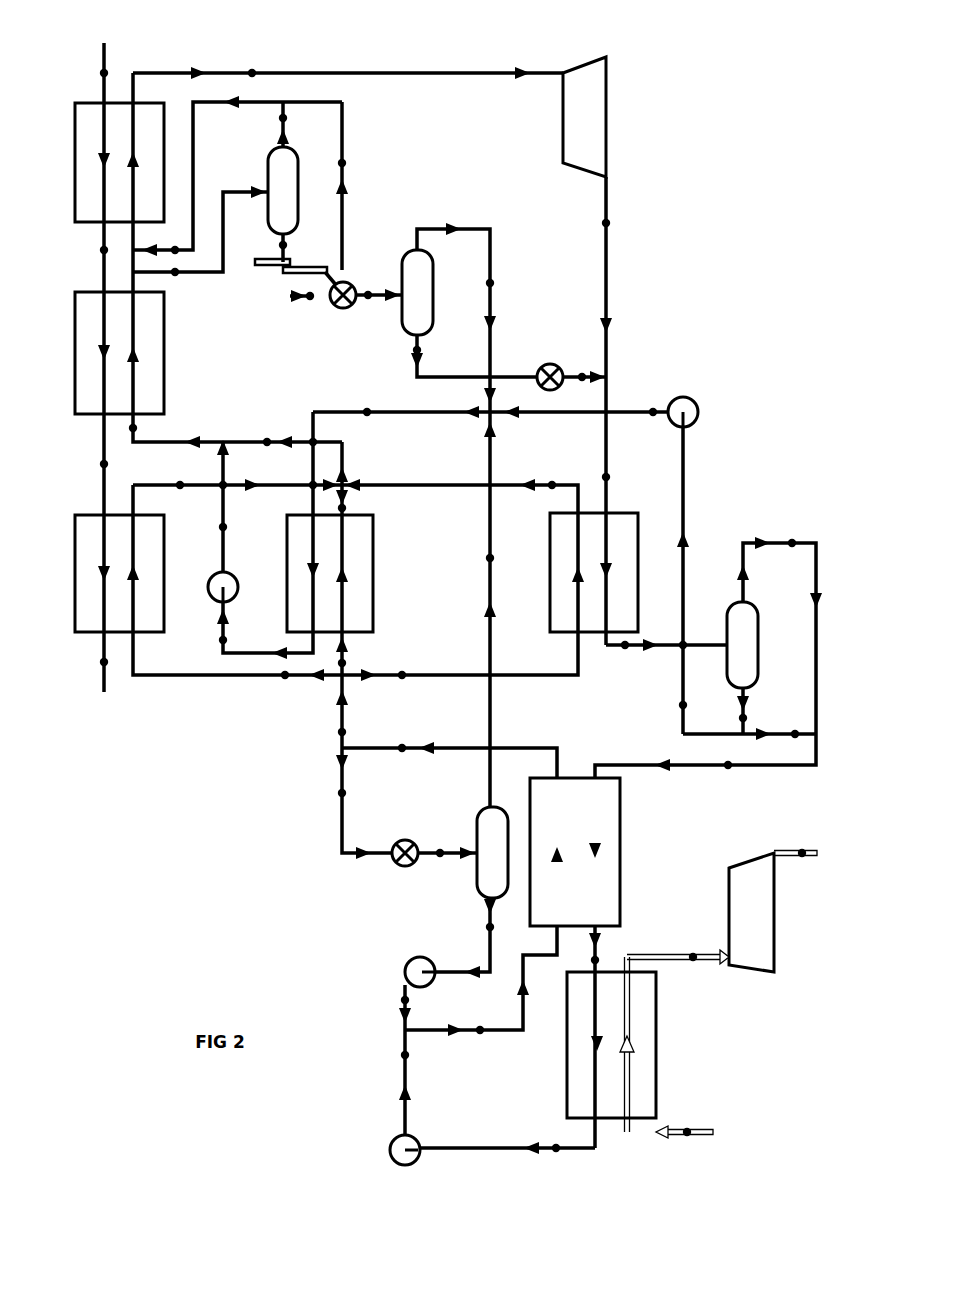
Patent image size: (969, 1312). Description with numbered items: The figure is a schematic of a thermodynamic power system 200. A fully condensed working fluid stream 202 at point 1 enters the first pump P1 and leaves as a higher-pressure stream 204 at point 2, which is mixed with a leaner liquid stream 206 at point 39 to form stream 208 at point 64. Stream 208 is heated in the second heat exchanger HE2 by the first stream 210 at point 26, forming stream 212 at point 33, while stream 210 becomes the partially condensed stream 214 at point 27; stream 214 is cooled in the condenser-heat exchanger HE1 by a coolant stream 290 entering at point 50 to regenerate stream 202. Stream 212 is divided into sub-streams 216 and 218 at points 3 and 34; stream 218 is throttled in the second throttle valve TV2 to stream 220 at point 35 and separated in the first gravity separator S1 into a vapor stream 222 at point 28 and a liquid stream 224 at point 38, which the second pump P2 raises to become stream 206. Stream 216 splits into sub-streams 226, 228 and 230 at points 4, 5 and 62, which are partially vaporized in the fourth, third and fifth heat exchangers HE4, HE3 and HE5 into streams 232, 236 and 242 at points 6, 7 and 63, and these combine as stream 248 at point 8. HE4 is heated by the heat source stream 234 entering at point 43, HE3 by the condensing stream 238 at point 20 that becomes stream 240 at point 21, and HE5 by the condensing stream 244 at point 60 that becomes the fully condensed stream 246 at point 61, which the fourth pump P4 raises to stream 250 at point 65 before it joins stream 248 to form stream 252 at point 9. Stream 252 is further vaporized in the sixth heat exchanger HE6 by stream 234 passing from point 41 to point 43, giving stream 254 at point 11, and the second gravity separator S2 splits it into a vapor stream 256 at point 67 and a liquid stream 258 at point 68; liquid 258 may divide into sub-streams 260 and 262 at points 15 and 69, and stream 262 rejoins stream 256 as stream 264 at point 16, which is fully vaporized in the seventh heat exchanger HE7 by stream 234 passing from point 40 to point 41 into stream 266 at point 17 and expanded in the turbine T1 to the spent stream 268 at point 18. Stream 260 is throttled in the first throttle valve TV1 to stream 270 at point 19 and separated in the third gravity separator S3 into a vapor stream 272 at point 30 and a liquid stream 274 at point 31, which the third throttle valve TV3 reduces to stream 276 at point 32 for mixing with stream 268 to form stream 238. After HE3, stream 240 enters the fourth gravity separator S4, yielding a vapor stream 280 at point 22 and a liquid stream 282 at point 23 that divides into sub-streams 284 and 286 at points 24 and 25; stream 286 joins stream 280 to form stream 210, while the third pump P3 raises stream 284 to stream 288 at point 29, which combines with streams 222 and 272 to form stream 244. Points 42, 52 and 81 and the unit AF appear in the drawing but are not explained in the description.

The thermodynamic cycle system 200 is at (770, 245).
The fully condensed working fluid stream 202 is at (443, 1147).
The elevated pressure stream 204 is at (402, 1074).
The liquid stream 206 is at (402, 1007).
The mixed stream 208 is at (501, 1034).
The first stream 210 is at (700, 768).
The heated liquid stream 212 is at (528, 747).
The partially condensed stream 214 is at (632, 948).
The first boiling composition sub-stream 216 is at (330, 710).
The throttled sub-stream 218 is at (340, 817).
The lower pressure stream 220 is at (455, 850).
The vapor stream 222 is at (488, 729).
The liquid stream 224 is at (448, 975).
The first sub-stream 226 is at (257, 679).
The second sub-stream 228 is at (390, 675).
The third sub-stream 230 is at (350, 652).
The first partially vaporized stream 232 is at (202, 483).
The heat source fluid stream 234 is at (104, 685).
The second partially vaporized stream 236 is at (374, 482).
The returning condensing stream 238 is at (607, 453).
The partially condensed stream 240 is at (663, 640).
The third partially vaporized stream 242 is at (350, 504).
The condensing stream 244 is at (343, 410).
The fully condensed stream 246 is at (250, 622).
The combined stream 248 is at (301, 447).
The higher pressure fully condensed stream 250 is at (228, 462).
The second combined stream 252 is at (170, 440).
The further vaporized stream 254 is at (190, 277).
The second vapor stream 256 is at (290, 112).
The second liquid stream 258 is at (255, 262).
The liquid sub-stream 260 is at (282, 287).
The liquid sub-stream 262 is at (346, 222).
The third combined stream 264 is at (197, 114).
The fully vaporized stream 266 is at (395, 82).
The spent stream 268 is at (604, 207).
The lower pressure stream 270 is at (380, 290).
The third vapor stream 272 is at (486, 250).
The third liquid stream 274 is at (415, 379).
The lower pressure stream 276 is at (600, 365).
The fourth vapor stream 280 is at (740, 560).
The fourth liquid stream 282 is at (750, 718).
The liquid sub-stream 284 is at (686, 485).
The liquid sub-stream 286 is at (777, 737).
The higher pressure stream 288 is at (650, 395).
The coolant stream 290 is at (707, 1125).
The point 1 is at (557, 1136).
The point 2 is at (414, 1054).
The point 3 is at (334, 731).
The point 4 is at (285, 687).
The point 5 is at (402, 687).
The point 6 is at (180, 496).
The point 7 is at (552, 473).
The point 8 is at (267, 431).
The point 9 is at (142, 427).
The point 11 is at (175, 283).
The point 15 is at (310, 307).
The point 16 is at (175, 238).
The point 17 is at (252, 60).
The point 18 is at (622, 222).
The point 19 is at (370, 306).
The point 20 is at (623, 476).
The point 21 is at (625, 656).
The point 22 is at (792, 531).
The point 23 is at (729, 717).
The point 24 is at (671, 704).
The point 25 is at (795, 722).
The point 26 is at (728, 778).
The point 27 is at (582, 959).
The point 28 is at (473, 557).
The point 29 is at (653, 424).
The point 30 is at (503, 282).
The point 31 is at (403, 349).
The point 32 is at (582, 389).
The point 33 is at (403, 736).
The point 34 is at (329, 792).
The point 35 is at (442, 864).
The point 38 is at (477, 926).
The point 39 is at (418, 999).
The point 40 is at (85, 72).
The point 41 is at (85, 249).
The stream point 42 is at (85, 463).
The point 43 is at (85, 661).
The point 50 is at (687, 1120).
The stream point 52 is at (795, 842).
The point 60 is at (367, 422).
The point 61 is at (209, 639).
The point 62 is at (330, 662).
The point 63 is at (329, 507).
The point 64 is at (482, 1040).
The point 65 is at (209, 526).
The point 67 is at (269, 117).
The point 68 is at (269, 244).
The point 69 is at (356, 162).
The stream point 81 is at (674, 1041).
The first condenser-heat exchanger HE1 is at (634, 1045).
The second heat exchanger HE2 is at (599, 852).
The third heat exchanger HE3 is at (571, 572).
The fourth heat exchanger HE4 is at (95, 573).
The fifth heat exchanger HE5 is at (354, 573).
The sixth heat exchanger HE6 is at (95, 353).
The seventh heat exchanger HE7 is at (95, 162).
The first gravity separator S1 is at (492, 852).
The second gravity separator S2 is at (283, 190).
The third gravity separator S3 is at (417, 292).
The fourth gravity separator S4 is at (742, 645).
The first throttle valve TV1 is at (343, 307).
The second throttle valve TV2 is at (405, 864).
The third throttle valve TV3 is at (550, 362).
The feed or first pump P1 is at (418, 1153).
The second pump P2 is at (420, 959).
The circulating or third pump P3 is at (703, 412).
The circulating or fourth pump P4 is at (208, 587).
The turbine T1 is at (584, 117).
The air fan / heat source AF is at (751, 912).